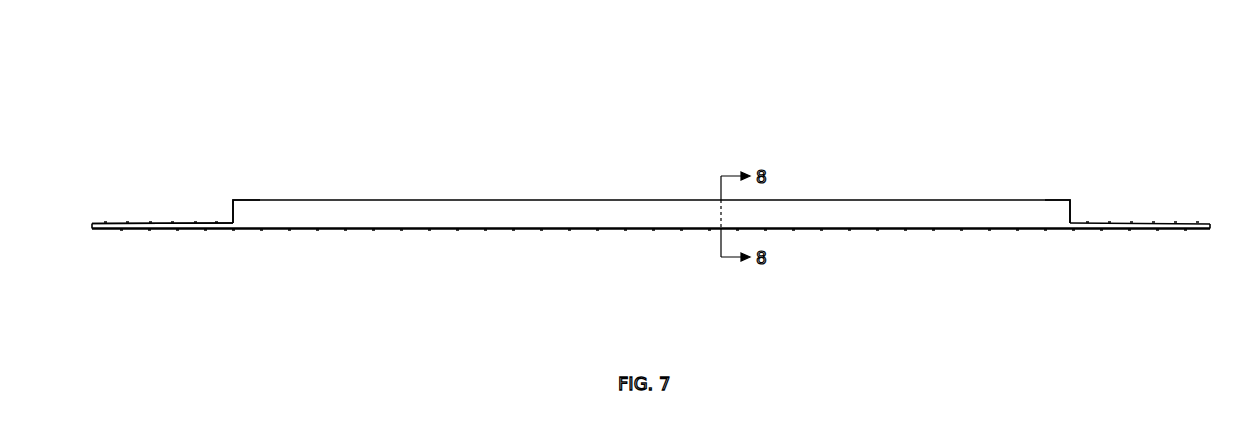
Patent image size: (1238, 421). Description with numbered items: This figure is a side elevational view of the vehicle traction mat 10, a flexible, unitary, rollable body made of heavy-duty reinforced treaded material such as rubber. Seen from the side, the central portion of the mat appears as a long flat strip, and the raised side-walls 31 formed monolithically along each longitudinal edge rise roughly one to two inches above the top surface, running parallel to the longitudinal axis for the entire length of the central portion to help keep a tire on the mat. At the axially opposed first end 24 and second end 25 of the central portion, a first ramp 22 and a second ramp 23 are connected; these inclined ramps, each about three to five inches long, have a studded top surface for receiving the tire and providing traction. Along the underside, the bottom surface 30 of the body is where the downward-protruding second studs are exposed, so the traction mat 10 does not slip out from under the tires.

The vehicle traction mat 10 is at (618, 116).
The first ramp 22 is at (1155, 223).
The second ramp 23 is at (170, 222).
The first end 24 is at (1072, 220).
The second end 25 is at (223, 217).
The bottom surface 30 is at (440, 228).
The raised side-walls 31 is at (466, 211).